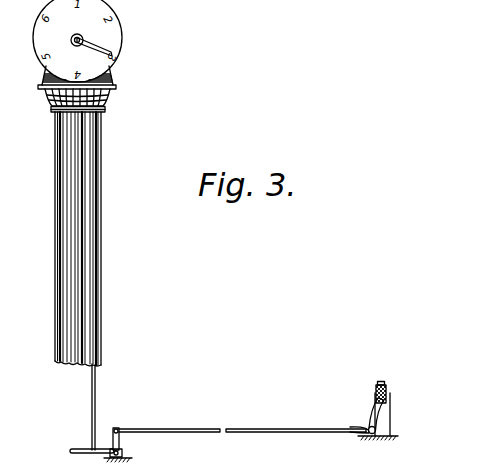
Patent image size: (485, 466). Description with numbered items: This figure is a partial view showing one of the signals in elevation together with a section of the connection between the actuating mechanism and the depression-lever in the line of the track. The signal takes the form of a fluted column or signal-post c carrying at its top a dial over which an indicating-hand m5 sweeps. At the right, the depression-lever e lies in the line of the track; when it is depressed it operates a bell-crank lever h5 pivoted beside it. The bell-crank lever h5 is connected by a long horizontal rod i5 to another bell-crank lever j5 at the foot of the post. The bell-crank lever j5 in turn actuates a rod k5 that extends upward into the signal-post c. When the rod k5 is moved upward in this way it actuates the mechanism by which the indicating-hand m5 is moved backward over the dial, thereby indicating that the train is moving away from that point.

The lever c is at (90, 165).
The indicating-hand m5 is at (96, 48).
The rod k5 is at (94, 414).
The bell-crank lever j5 is at (122, 440).
The rod i5 is at (277, 428).
The bell-crank lever h5 is at (370, 417).
The lever e is at (384, 381).